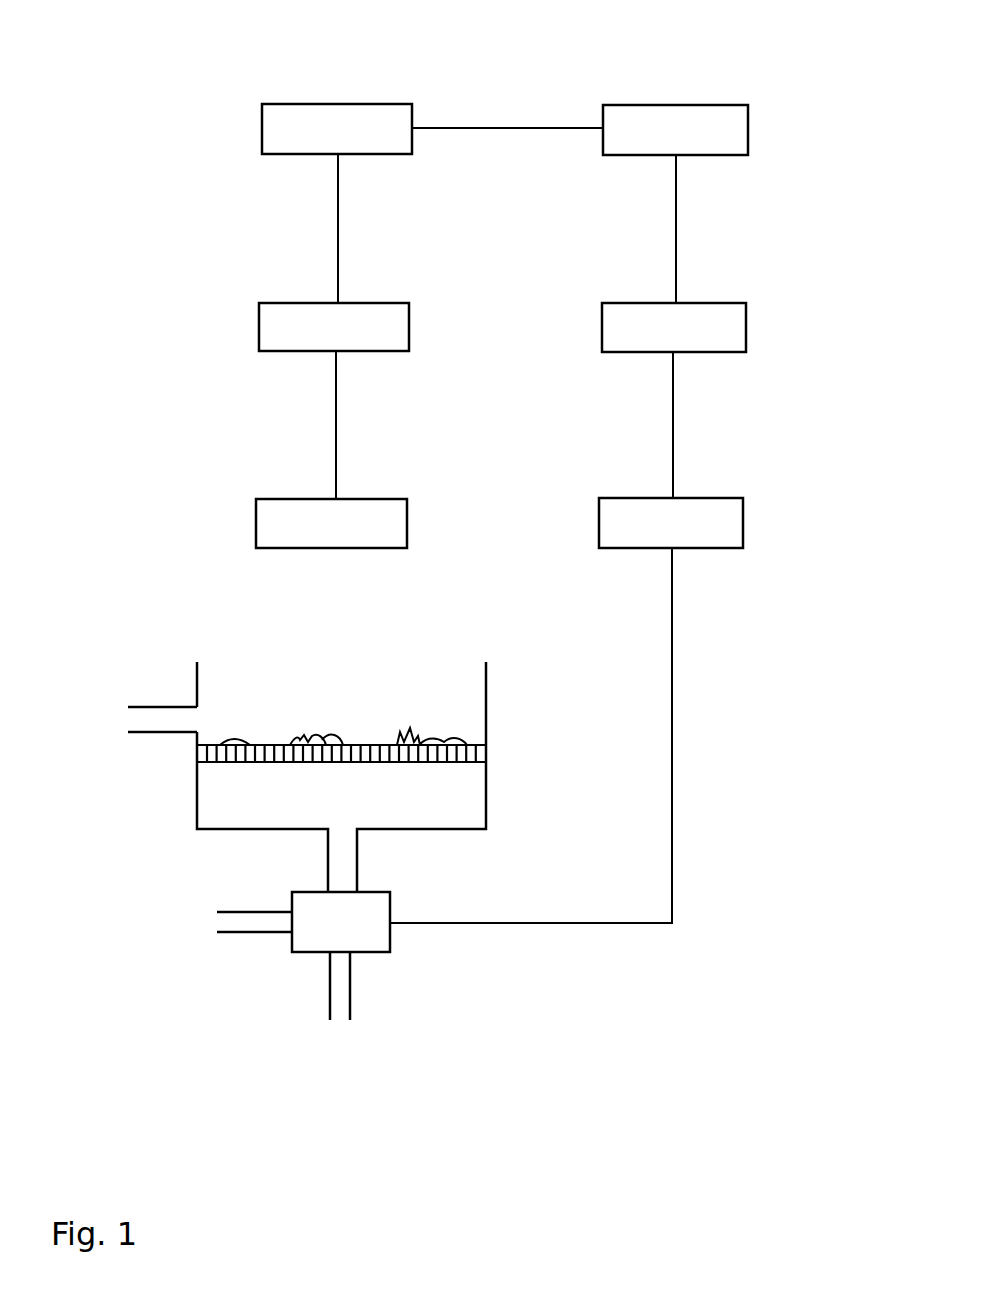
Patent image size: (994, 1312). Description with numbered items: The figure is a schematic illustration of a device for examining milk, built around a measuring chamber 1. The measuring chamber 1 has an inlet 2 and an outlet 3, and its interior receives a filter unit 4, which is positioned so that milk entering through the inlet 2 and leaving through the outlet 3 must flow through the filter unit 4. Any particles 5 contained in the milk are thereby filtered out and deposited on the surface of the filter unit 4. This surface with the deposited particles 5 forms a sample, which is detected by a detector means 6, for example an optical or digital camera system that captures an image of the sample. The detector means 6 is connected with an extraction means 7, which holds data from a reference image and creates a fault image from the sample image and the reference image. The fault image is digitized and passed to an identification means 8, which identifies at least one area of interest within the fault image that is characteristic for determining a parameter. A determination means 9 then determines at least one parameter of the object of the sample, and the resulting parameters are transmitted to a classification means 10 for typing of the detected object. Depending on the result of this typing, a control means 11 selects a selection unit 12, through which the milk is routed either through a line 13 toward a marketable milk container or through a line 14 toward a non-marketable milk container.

The measuring chamber 1 is at (428, 700).
The inlet 2 is at (145, 707).
The outlet 3 is at (327, 858).
The filter unit 4 is at (247, 762).
The particles 5 is at (320, 732).
The detector means 6 is at (256, 516).
The extraction means 7 is at (259, 318).
The identification means 8 is at (262, 125).
The determination means 9 is at (688, 105).
The classification means 10 is at (746, 323).
The control means 11 is at (743, 518).
The selection unit 12 is at (390, 937).
The line 13 is at (237, 933).
The line 14 is at (328, 1002).